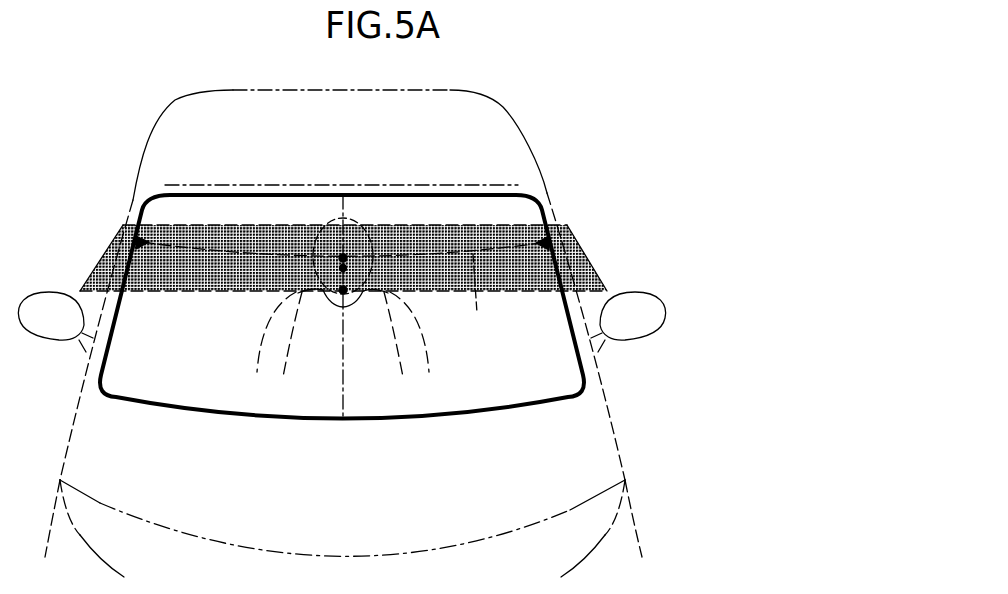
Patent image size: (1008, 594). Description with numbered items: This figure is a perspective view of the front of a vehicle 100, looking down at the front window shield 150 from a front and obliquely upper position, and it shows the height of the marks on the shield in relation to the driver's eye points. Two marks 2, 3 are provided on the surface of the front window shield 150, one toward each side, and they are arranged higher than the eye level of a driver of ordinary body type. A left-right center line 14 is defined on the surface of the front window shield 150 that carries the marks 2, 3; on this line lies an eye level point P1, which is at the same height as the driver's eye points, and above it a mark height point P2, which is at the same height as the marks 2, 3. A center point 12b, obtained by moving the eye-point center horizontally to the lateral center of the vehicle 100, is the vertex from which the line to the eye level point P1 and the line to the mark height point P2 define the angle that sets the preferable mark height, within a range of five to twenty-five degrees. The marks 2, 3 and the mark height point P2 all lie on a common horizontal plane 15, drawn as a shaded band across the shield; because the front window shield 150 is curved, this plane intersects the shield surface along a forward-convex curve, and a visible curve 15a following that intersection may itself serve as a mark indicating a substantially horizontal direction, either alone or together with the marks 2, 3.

The vehicle 100 is at (503, 107).
The front window shield 150 is at (543, 197).
The horizontal plane 15 is at (598, 270).
The visible curve 15a is at (494, 296).
The left-right center line 14 is at (347, 389).
The center point 12b is at (332, 268).
The eye level point P1 is at (350, 295).
The mark height point P2 is at (351, 259).
The mark 3 is at (141, 242).
The mark 2 is at (543, 243).